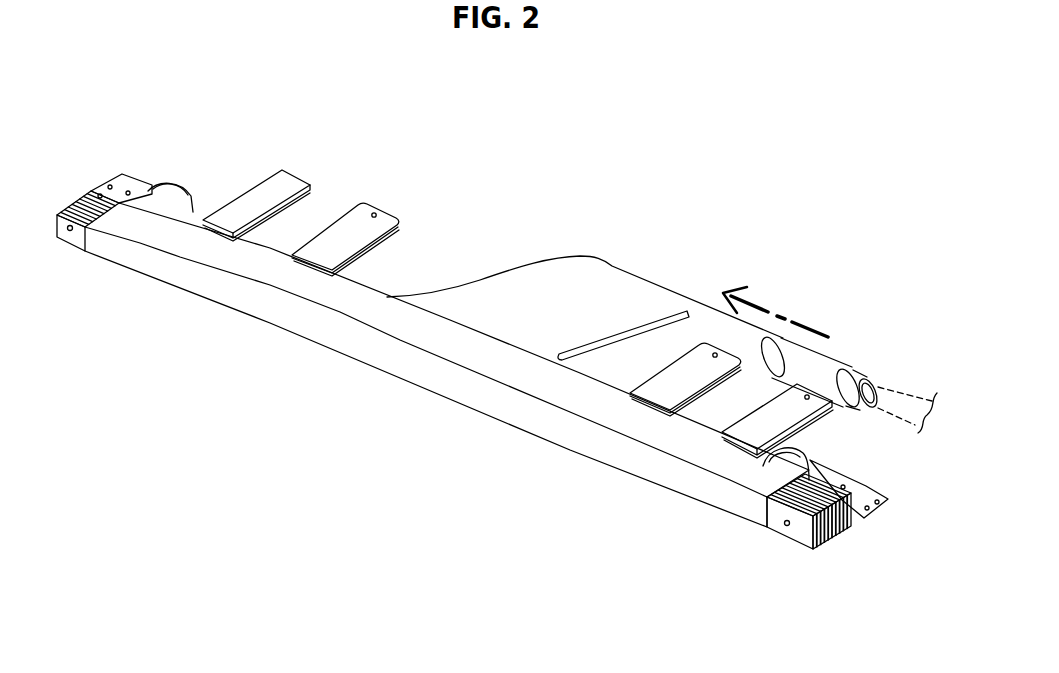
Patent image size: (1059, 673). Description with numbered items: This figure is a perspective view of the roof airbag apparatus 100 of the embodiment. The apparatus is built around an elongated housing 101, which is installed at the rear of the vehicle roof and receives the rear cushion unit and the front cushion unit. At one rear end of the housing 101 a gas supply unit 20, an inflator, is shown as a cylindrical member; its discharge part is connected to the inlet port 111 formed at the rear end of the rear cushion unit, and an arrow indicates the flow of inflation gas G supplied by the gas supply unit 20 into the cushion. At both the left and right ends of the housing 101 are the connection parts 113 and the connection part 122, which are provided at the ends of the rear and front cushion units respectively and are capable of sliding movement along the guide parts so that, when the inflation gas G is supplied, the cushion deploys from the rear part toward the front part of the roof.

The roof airbag apparatus 100 is at (392, 316).
The housing 101 is at (482, 356).
The inlet port 111 is at (560, 278).
The connection parts 113 is at (90, 203).
The connection part 122 is at (454, 362).
The gas supply unit 20 is at (822, 371).
The inflation gas G is at (762, 296).